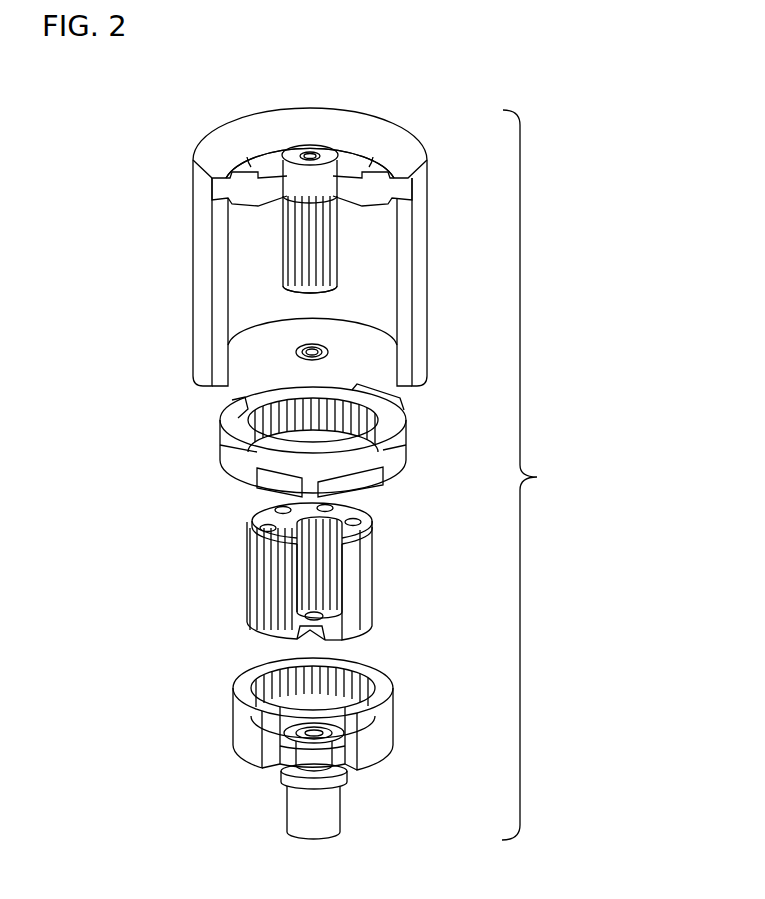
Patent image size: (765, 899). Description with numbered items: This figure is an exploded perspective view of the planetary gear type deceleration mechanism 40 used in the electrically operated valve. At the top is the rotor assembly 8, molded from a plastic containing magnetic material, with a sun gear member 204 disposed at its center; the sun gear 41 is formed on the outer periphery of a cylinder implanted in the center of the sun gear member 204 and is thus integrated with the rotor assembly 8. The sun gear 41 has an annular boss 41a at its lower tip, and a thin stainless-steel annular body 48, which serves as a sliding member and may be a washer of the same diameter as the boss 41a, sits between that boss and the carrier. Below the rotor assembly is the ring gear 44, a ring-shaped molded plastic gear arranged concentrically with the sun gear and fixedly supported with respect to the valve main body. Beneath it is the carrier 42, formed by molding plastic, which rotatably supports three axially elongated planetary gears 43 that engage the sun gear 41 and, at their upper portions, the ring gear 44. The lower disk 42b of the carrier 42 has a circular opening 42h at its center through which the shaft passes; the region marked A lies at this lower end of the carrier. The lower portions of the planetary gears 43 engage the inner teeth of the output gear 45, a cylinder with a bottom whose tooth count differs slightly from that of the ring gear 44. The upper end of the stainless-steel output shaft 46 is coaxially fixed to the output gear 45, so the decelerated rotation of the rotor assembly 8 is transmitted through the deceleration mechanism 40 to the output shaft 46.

The sun gear member 204 is at (358, 143).
The rotor assembly 8 is at (407, 162).
The sun gear 41 is at (340, 237).
The annular boss 41a is at (325, 290).
The annular body 48 is at (330, 352).
The ring gear 44 is at (400, 415).
The carrier 42 is at (358, 583).
The planetary gears 43 is at (247, 581).
The lower disk 42b is at (303, 615).
The circular opening 42h is at (320, 617).
The region A is at (323, 612).
The output gear 45 is at (387, 690).
The output shaft 46 is at (318, 812).
The deceleration mechanism 40 is at (541, 475).